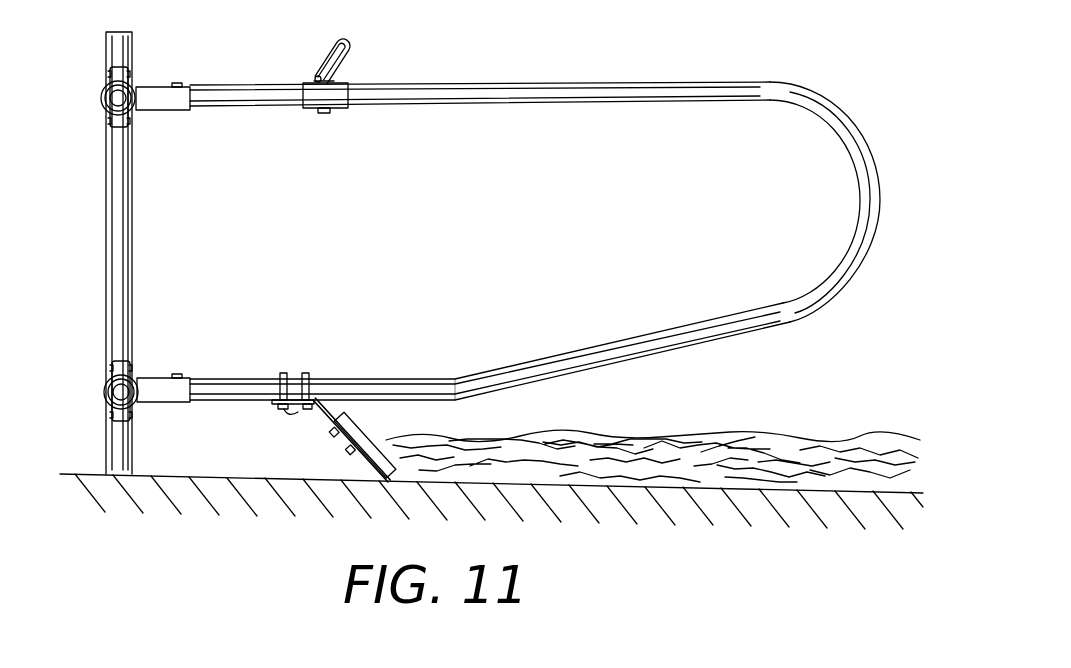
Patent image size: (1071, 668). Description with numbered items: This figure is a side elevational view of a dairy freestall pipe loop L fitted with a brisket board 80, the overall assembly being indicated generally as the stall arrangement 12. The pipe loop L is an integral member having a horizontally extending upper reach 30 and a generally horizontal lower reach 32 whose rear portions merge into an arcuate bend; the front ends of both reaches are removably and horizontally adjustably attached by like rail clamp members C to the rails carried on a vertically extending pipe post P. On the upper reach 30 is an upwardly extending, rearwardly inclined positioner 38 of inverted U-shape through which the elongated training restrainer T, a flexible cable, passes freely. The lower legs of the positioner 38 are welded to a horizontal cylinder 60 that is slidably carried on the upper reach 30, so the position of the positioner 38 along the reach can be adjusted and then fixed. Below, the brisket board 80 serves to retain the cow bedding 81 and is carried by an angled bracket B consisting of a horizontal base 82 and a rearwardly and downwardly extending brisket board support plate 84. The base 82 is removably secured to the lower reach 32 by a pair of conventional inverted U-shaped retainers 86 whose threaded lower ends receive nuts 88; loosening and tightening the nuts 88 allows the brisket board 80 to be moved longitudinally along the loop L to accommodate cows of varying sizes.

The collapsible gate assembly 12 is at (347, 362).
The upper reach 30 is at (510, 84).
The lower reach 32 is at (250, 379).
The positioner 38 is at (348, 48).
The cylinder 60 is at (311, 106).
The brisket board 80 is at (382, 455).
The cow bedding 81 is at (627, 456).
The horizontal base 82 is at (273, 404).
The brisket board support plate 84 is at (337, 438).
The inverted U-shaped retainers 86 is at (305, 374).
The nuts 88 is at (295, 410).
The angled bracket B is at (323, 419).
The rail clamp member C is at (103, 89).
The pipe loop L is at (624, 84).
The pipe post P is at (105, 241).
The training restrainer T is at (318, 78).